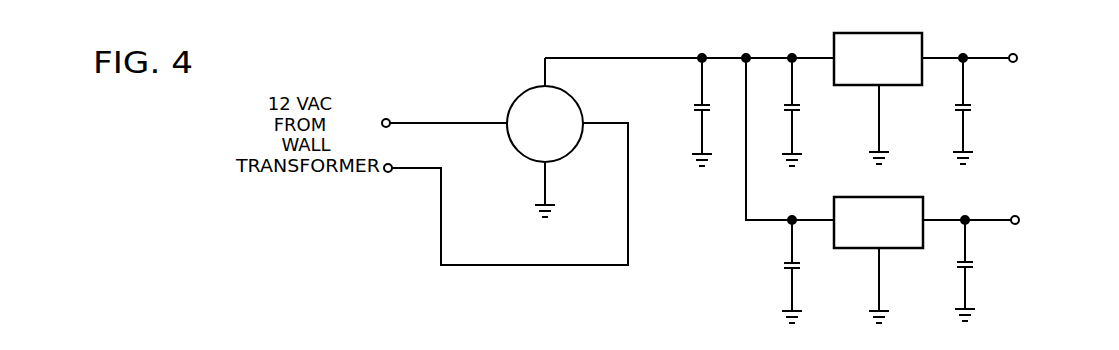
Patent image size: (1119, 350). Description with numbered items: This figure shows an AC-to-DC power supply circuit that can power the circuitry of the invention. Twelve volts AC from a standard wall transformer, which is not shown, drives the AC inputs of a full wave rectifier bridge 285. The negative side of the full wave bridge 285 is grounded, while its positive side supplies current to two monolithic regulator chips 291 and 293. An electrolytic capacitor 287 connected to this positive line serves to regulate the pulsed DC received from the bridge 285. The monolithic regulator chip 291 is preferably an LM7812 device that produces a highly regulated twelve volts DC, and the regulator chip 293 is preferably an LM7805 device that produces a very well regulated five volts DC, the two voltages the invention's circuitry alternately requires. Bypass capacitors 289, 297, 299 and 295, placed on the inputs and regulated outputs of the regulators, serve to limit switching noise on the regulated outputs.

The full wave rectifier bridge 285 is at (527, 86).
The electrolytic capacitor 287 is at (712, 112).
The bypass capacitor 289 is at (803, 110).
The monolithic regulator chip 291 is at (923, 38).
The regulator chip 293 is at (923, 203).
The bypass capacitor 295 is at (808, 265).
The bypass capacitor 297 is at (975, 110).
The bypass capacitor 299 is at (982, 267).